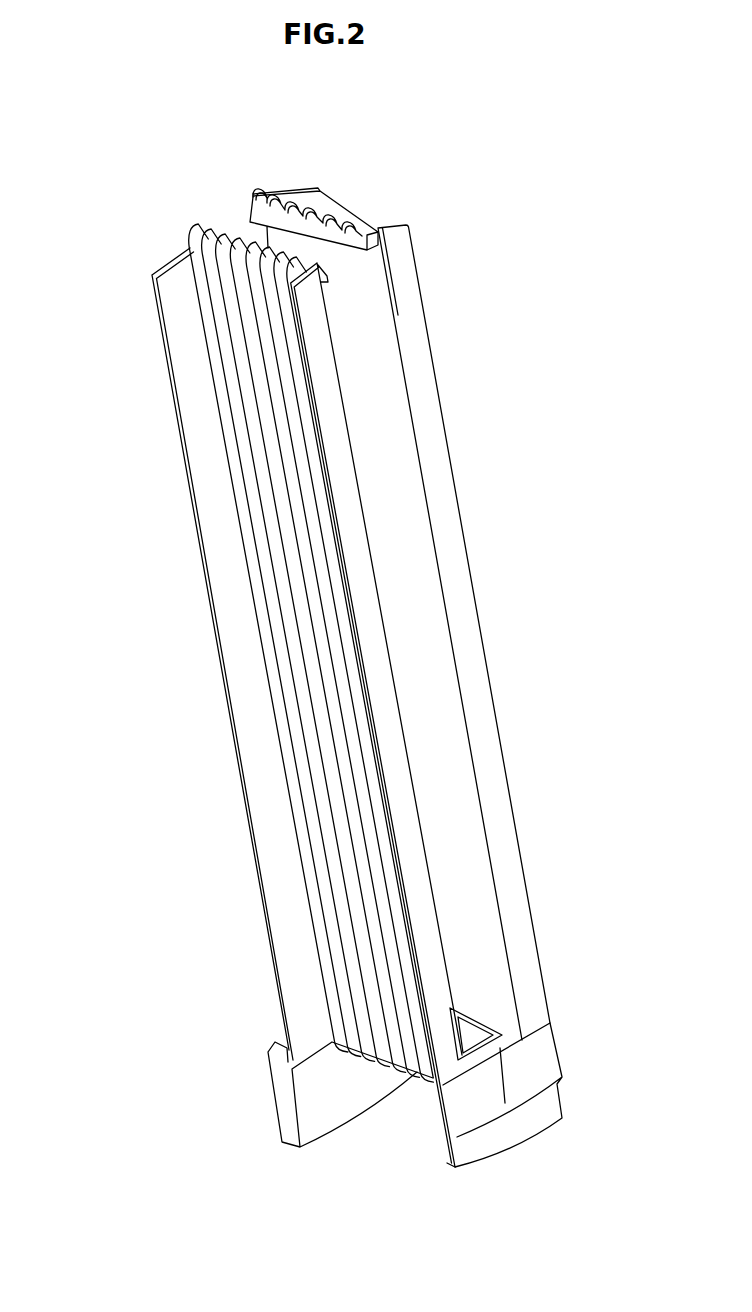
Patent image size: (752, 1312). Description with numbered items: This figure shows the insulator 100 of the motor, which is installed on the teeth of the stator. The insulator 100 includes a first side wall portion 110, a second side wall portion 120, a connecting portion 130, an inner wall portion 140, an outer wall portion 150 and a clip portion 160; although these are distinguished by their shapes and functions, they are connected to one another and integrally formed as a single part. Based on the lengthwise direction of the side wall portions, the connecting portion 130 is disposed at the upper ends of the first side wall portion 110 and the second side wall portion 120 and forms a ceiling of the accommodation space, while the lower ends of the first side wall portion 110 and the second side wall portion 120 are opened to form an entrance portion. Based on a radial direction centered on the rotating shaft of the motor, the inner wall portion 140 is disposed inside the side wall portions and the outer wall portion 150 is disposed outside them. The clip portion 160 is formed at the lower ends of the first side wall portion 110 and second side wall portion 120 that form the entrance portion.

The insulator 100 is at (70, 110).
The first side wall portion 110 is at (383, 400).
The second side wall portion 120 is at (352, 515).
The connecting portion 130 is at (500, 1037).
The inner wall portion 140 is at (513, 1133).
The outer wall portion 150 is at (330, 1128).
The clip portion 160 is at (340, 238).